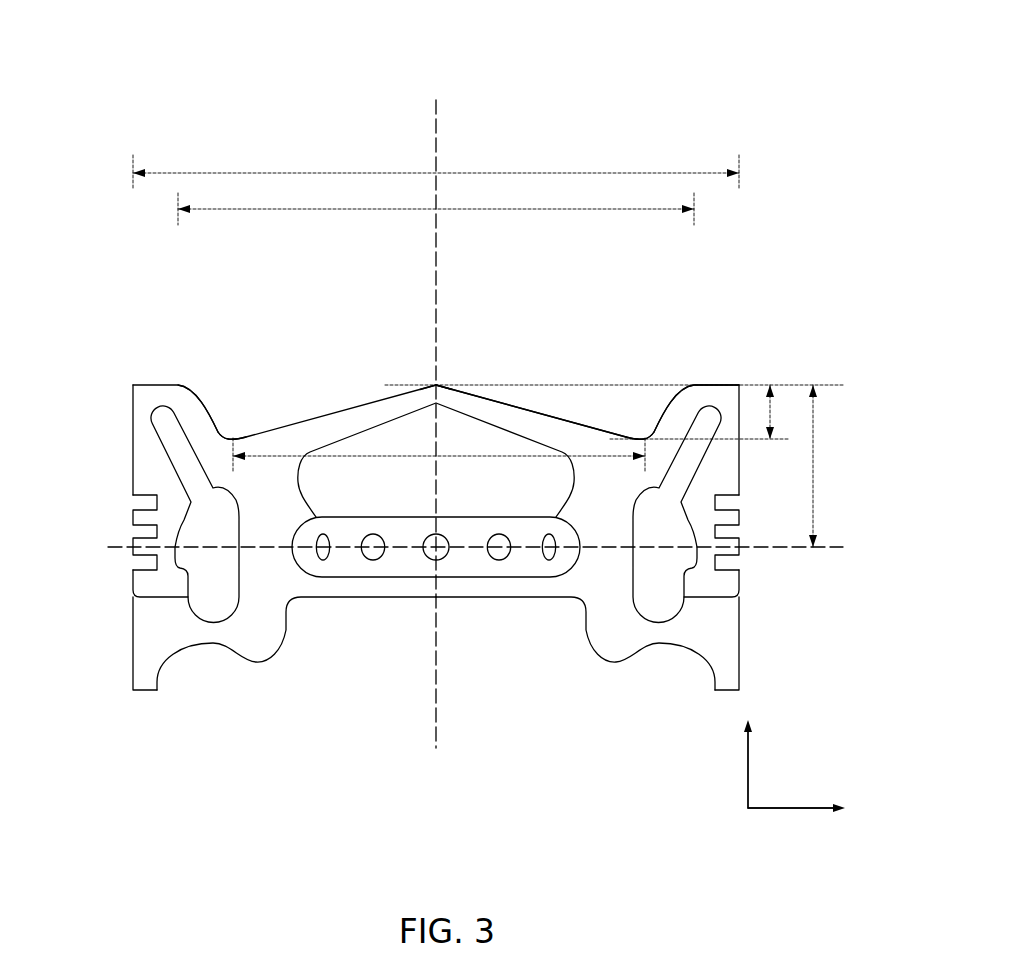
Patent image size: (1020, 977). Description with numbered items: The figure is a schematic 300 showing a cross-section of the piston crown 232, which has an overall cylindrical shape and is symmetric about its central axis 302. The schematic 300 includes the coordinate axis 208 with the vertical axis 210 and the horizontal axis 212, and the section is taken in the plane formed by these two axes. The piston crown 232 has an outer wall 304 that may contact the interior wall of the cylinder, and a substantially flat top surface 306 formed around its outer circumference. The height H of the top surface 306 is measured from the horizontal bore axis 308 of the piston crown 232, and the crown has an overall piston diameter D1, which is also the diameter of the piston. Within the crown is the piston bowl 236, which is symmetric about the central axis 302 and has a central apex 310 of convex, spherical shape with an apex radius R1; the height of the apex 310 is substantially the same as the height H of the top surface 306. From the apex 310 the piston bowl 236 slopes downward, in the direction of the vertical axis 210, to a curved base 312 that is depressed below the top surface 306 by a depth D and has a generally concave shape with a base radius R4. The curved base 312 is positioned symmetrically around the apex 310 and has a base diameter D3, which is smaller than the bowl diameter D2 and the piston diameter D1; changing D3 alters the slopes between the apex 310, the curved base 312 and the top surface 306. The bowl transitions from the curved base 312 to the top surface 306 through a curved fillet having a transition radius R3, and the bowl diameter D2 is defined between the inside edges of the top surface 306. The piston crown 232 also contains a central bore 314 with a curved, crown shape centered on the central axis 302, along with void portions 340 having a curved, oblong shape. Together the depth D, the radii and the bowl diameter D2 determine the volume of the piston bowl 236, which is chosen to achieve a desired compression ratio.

The schematic 300 is at (713, 34).
The central axis 302 is at (438, 117).
The outer wall 304 is at (130, 462).
The top surface 306 is at (718, 382).
The horizontal bore axis 308 is at (783, 549).
The apex 310 is at (437, 377).
The curved base 312 is at (643, 417).
The central bore 314 is at (575, 468).
The piston crown 232 is at (148, 489).
The piston bowl 236 is at (590, 335).
The void portions 340 is at (212, 612).
The coordinate axis 208 is at (735, 834).
The vertical axis 210 is at (737, 762).
The horizontal axis 212 is at (795, 812).
The piston diameter D1 is at (577, 172).
The bowl diameter D2 is at (503, 210).
The base diameter D3 is at (363, 458).
The depth D is at (774, 412).
The height H is at (843, 497).
The apex radius R1 is at (431, 374).
The transition radius R3 is at (189, 377).
The base radius R4 is at (236, 428).